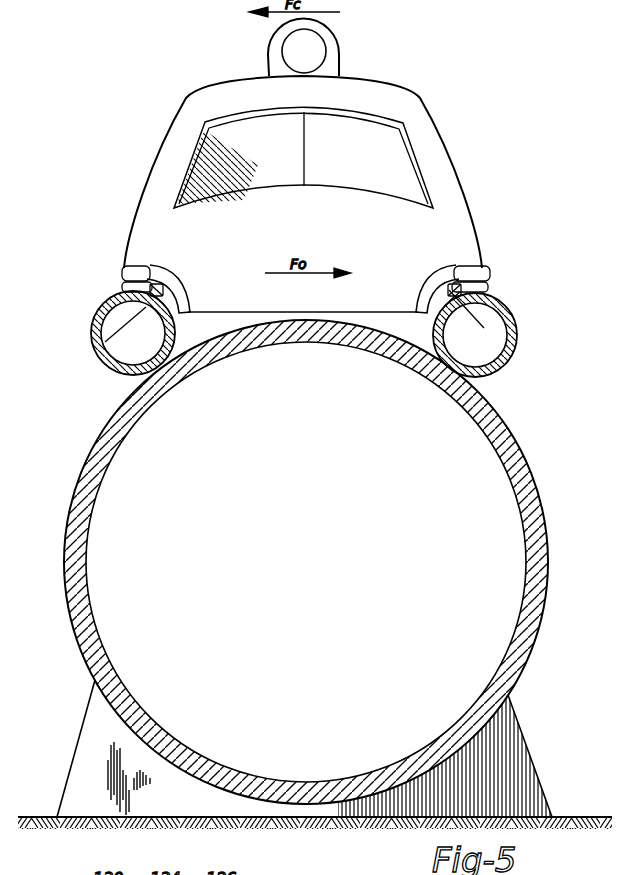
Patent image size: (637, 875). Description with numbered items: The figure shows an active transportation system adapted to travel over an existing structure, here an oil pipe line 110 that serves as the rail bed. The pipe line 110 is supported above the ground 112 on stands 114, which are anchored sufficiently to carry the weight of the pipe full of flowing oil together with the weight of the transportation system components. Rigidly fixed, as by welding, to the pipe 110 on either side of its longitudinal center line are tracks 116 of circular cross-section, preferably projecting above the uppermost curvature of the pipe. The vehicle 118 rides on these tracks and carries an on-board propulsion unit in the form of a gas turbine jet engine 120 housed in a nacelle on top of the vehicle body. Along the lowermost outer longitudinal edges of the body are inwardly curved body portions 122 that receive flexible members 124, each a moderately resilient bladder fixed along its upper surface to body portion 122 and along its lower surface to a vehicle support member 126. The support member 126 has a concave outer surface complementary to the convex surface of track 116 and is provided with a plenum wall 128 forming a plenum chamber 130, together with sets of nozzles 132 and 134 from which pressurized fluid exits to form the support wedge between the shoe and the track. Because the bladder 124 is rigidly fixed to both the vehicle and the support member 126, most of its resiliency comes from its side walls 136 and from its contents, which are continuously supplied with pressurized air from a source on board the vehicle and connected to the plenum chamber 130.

The pipe line 110 is at (504, 419).
The ground 112 is at (560, 817).
The stands 114 is at (507, 718).
The tracks 116 is at (108, 372).
The vehicle 118 is at (434, 112).
The gas turbine jet engine 120 is at (340, 46).
The inwardly curved body portions 122 is at (150, 285).
The flexible members 124 is at (122, 272).
The vehicle support member 126 is at (150, 294).
The plenum wall 128 is at (150, 266).
The plenum chamber 130 is at (154, 290).
The nozzles 132 is at (96, 340).
The nozzles 134 is at (93, 318).
The side walls 136 is at (122, 286).